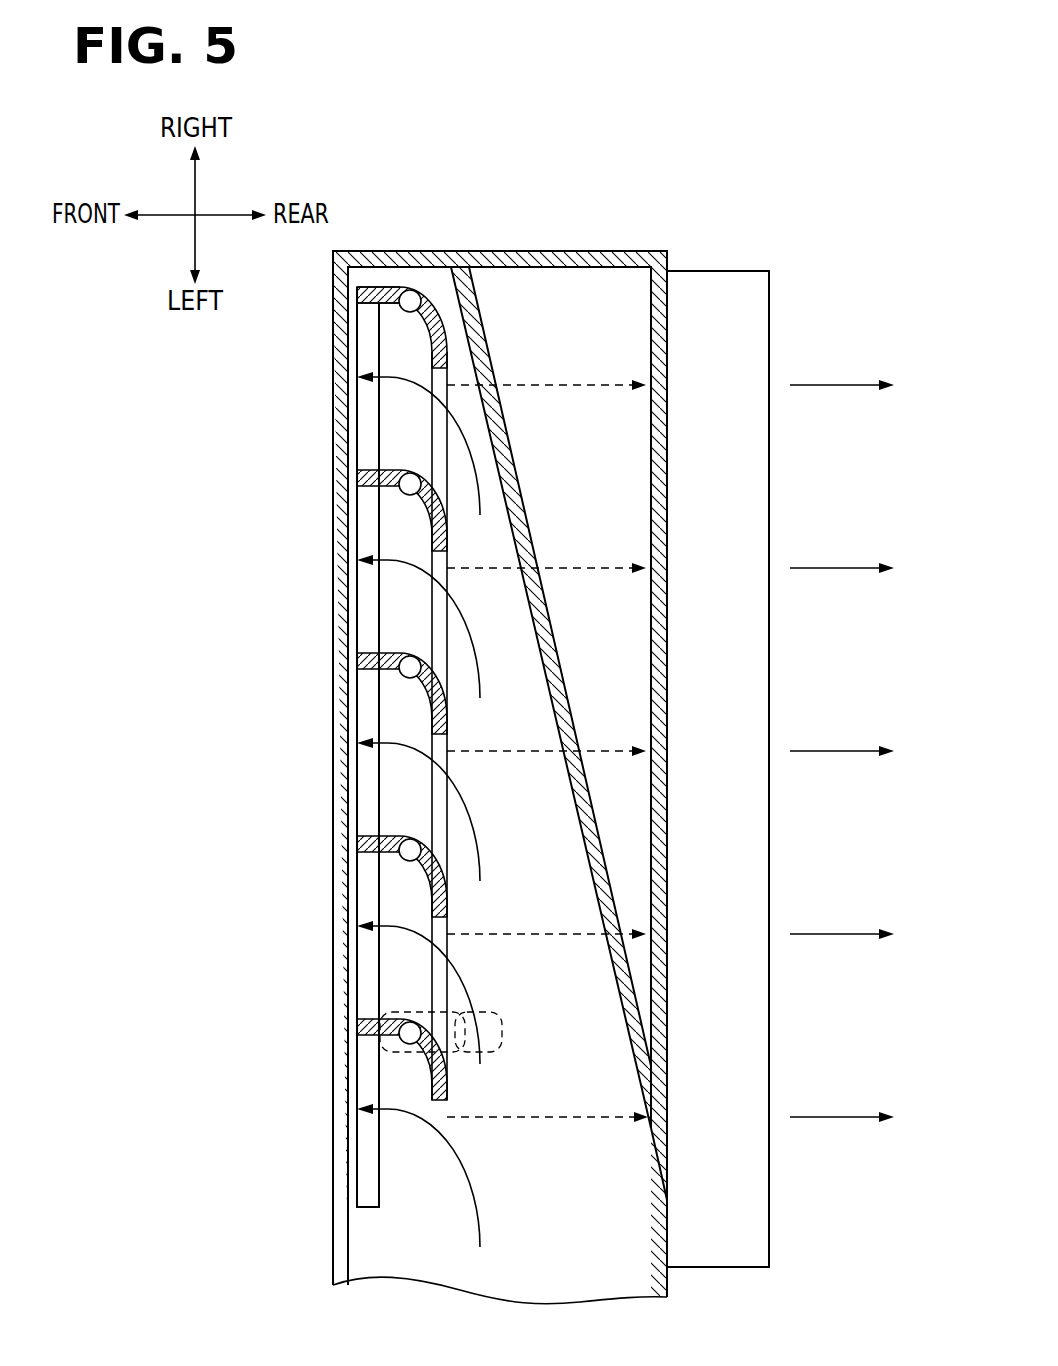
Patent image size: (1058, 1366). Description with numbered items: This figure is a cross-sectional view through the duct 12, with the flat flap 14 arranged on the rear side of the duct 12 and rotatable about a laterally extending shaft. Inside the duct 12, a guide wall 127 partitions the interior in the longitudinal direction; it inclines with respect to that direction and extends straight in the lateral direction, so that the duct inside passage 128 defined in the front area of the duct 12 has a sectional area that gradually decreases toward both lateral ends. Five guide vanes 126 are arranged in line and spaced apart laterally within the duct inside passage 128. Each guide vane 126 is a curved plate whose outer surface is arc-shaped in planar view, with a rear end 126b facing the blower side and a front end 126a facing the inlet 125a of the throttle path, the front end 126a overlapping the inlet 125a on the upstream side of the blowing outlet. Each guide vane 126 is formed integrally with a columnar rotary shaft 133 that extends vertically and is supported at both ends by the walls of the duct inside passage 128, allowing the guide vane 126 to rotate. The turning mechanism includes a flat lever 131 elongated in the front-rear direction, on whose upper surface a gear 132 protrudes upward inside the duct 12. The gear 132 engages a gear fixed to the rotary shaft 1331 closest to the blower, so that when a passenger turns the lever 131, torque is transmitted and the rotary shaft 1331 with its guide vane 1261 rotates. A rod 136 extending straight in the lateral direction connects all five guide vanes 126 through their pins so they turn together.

The duct 12 is at (616, 248).
The flap 14 is at (735, 262).
The inlet 125a is at (365, 783).
The guide vane 126 is at (400, 307).
The guide vane 1261 is at (402, 1042).
The front end 126a is at (372, 290).
The rear end 126b is at (447, 360).
The guide wall 127 is at (459, 297).
The duct inside passage 128 is at (597, 1201).
The lever 131 is at (502, 1022).
The gear 132 is at (460, 1014).
The rotary shaft 133 is at (419, 294).
The rotary shaft 1331 is at (316, 1014).
The rod 136 is at (478, 883).